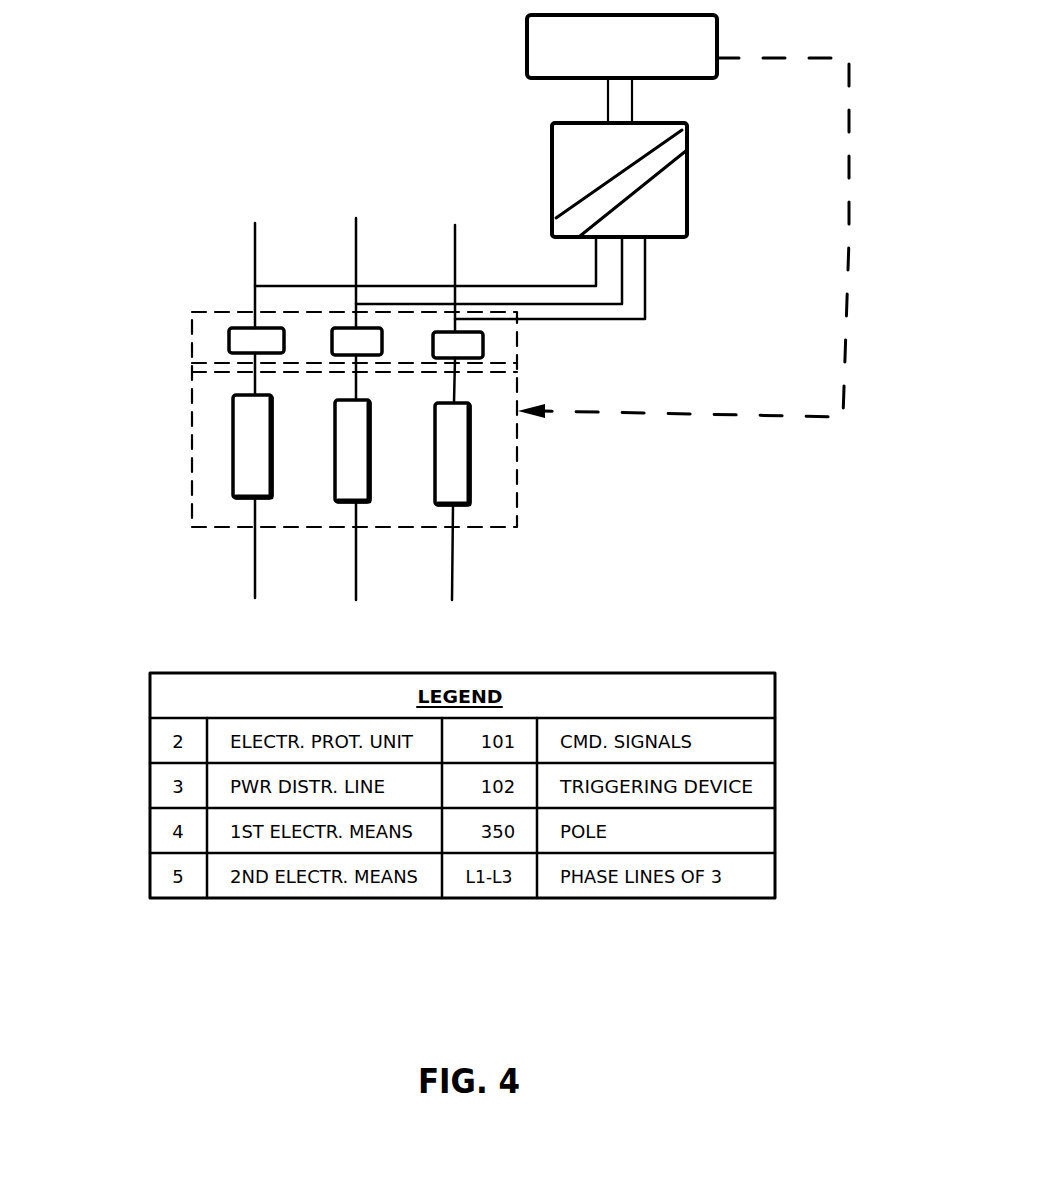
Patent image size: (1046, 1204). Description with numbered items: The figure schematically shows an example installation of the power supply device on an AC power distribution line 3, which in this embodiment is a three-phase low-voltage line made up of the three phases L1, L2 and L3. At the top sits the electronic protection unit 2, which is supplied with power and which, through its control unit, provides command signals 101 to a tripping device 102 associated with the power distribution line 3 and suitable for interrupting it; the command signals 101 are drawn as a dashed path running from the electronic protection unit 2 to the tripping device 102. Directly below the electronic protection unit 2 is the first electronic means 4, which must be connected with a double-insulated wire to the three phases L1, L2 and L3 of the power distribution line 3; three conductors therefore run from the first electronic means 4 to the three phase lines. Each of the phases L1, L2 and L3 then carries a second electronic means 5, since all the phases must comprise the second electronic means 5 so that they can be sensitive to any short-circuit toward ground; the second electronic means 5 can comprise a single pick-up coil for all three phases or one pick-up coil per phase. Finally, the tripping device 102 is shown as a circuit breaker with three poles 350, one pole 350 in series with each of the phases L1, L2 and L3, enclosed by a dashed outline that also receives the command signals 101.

The electronic protection unit 2 is at (703, 40).
The power distribution line 3 is at (237, 217).
The first electronic means 4 is at (670, 183).
The second electronic means 5 is at (250, 338).
The command signals 101 is at (715, 238).
The tripping device 102 is at (513, 505).
The pole 350 is at (238, 432).
The phase L1 is at (225, 475).
The phase L2 is at (326, 477).
The phase L3 is at (426, 483).